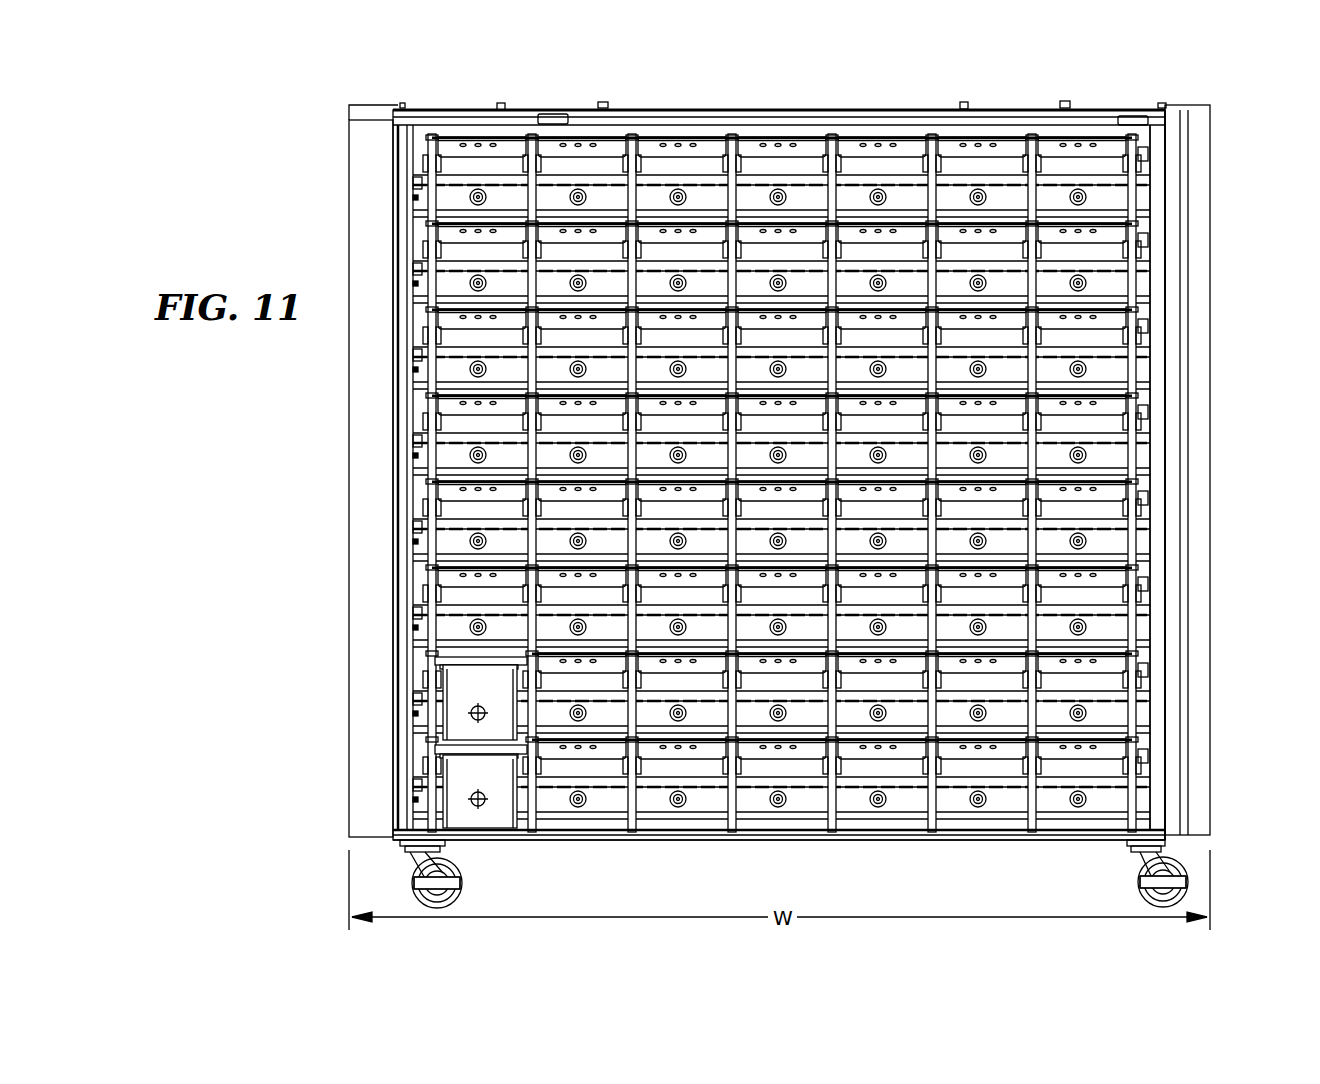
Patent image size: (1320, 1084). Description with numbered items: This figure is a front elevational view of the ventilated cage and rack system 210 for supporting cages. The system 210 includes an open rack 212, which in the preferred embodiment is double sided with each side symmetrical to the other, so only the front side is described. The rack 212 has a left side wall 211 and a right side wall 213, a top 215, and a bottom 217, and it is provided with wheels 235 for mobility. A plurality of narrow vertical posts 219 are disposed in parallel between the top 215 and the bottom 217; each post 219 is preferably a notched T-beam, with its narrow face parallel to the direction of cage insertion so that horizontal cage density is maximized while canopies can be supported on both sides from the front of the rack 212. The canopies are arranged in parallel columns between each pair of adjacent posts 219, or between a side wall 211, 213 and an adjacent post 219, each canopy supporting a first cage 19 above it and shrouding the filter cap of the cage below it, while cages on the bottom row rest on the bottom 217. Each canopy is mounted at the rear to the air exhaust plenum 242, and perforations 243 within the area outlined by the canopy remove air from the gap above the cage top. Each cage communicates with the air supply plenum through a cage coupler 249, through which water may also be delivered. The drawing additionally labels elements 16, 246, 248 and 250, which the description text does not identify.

The drawer 16 is at (498, 820).
The first cage 19 is at (452, 724).
The ventilated cage and rack system 210 is at (338, 485).
The left side wall 211 is at (402, 660).
The rack 212 is at (1222, 404).
The right side wall 213 is at (1162, 543).
The top 215 is at (887, 132).
The bottom 217 is at (987, 832).
The posts 219 is at (532, 822).
The wheels 235 is at (412, 895).
The air exhaust plenum 242 is at (430, 148).
The perforations 243 is at (496, 150).
The side panel channel 246 is at (1195, 440).
The shelf panel 248 is at (440, 205).
The cage coupler 249 is at (476, 194).
The left side panel 250 is at (388, 421).